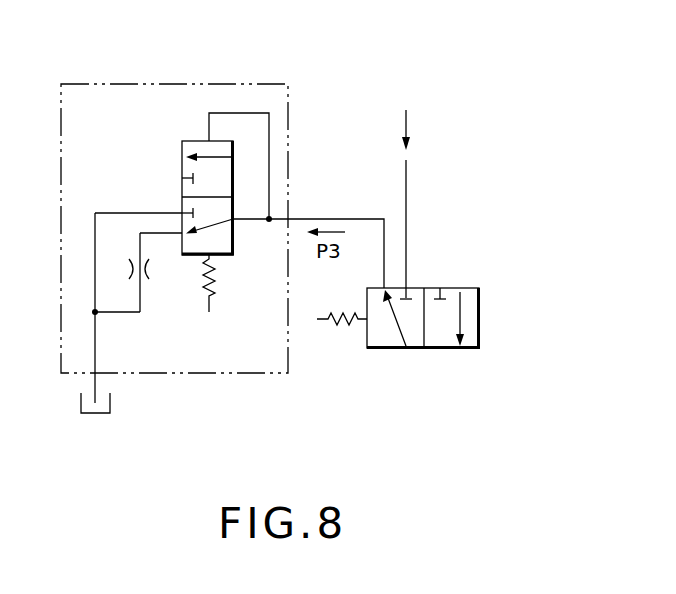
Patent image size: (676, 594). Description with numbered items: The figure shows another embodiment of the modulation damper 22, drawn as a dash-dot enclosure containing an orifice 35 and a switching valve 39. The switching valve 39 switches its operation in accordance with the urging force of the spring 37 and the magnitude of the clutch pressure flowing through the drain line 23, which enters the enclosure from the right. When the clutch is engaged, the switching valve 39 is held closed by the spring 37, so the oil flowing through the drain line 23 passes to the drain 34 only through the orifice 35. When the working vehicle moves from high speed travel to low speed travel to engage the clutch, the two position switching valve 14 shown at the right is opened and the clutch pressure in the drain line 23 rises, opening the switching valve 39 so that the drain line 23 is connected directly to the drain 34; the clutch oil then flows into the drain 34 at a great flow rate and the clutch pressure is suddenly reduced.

The modulation damper 22 is at (243, 83).
The switching valve 39 is at (196, 140).
The drain line 23 is at (337, 218).
The orifice 35 is at (149, 273).
The spring 37 is at (210, 305).
The drain 34 is at (95, 418).
The two position switching valve 14 is at (446, 287).